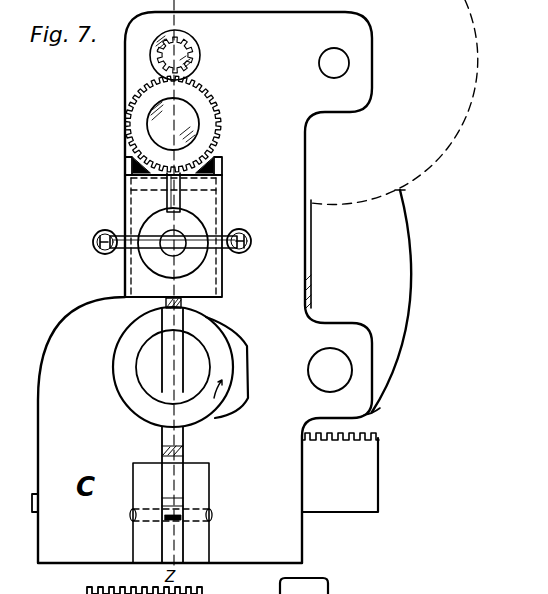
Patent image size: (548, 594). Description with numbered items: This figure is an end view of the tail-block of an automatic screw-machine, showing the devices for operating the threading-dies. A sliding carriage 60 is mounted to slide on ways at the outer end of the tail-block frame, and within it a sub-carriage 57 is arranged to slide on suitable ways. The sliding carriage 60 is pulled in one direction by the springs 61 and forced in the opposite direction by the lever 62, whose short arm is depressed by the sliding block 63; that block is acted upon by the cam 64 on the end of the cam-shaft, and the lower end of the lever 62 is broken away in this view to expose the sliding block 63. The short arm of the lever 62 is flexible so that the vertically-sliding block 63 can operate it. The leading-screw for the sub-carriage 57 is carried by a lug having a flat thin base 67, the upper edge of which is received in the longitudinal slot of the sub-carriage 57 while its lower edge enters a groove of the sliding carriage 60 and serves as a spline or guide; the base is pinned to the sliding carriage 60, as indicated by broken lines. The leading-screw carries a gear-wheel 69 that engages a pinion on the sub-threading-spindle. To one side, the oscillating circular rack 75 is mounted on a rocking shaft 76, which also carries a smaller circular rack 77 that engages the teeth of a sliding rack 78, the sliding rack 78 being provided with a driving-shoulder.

The sub-carriage 57 is at (212, 170).
The sliding carriage 60 is at (173, 227).
The springs 61 is at (106, 252).
The lever 62 is at (183, 307).
The sliding block 63 is at (162, 440).
The cam 64 is at (180, 367).
The flat thin base 67 is at (168, 196).
The gear-wheel 69 is at (173, 124).
The oscillating circular rack 75 is at (337, 254).
The rocking shaft 76 is at (330, 370).
The smaller circular rack 77 is at (371, 413).
The sliding rack 78 is at (340, 472).